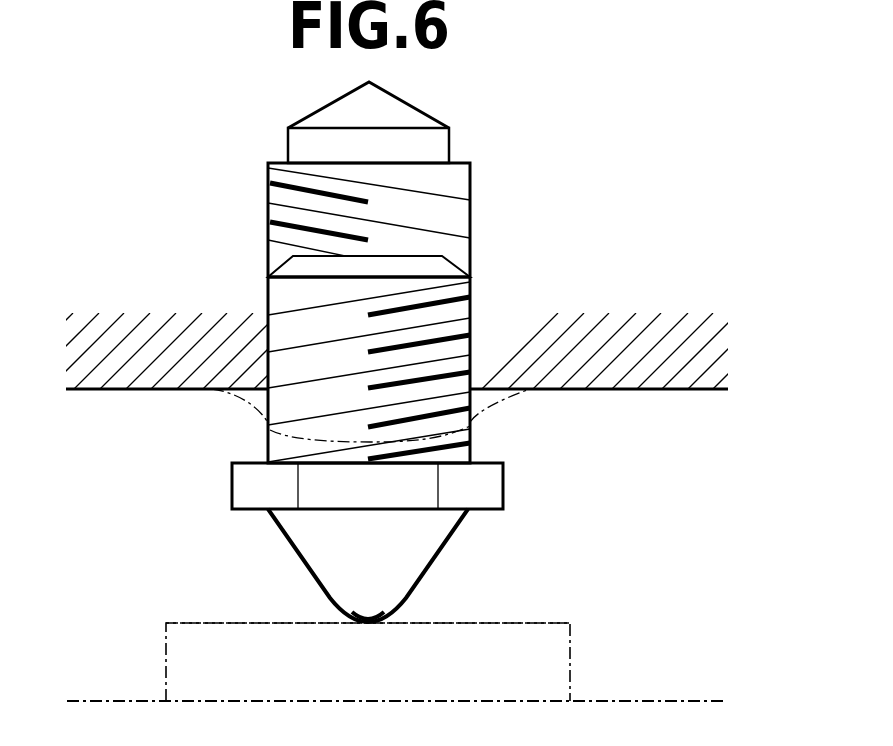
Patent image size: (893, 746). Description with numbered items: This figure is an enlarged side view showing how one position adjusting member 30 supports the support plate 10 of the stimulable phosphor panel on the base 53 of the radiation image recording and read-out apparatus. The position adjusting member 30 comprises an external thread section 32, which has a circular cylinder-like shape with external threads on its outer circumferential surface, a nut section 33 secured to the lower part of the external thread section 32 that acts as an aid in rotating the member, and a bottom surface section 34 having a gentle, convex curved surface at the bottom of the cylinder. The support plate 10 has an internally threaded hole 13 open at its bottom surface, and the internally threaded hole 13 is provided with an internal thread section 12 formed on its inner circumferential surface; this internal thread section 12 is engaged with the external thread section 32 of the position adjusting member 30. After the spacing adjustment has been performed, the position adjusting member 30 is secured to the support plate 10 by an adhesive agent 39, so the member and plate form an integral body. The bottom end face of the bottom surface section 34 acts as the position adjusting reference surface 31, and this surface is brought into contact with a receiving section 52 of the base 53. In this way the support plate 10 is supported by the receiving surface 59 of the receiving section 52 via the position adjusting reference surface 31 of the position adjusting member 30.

The support plate 10 is at (657, 382).
The internal thread section 12 is at (470, 222).
The internally threaded hole 13 is at (424, 104).
The position adjusting member 30 is at (425, 507).
The position adjusting reference surface 31 is at (370, 625).
The external thread section 32 is at (465, 442).
The nut section 33 is at (493, 492).
The bottom surface section 34 is at (422, 560).
The adhesive agent 39 is at (258, 400).
The receiving section 52 is at (560, 674).
The base 53 is at (688, 716).
The receiving surface 59 is at (550, 618).